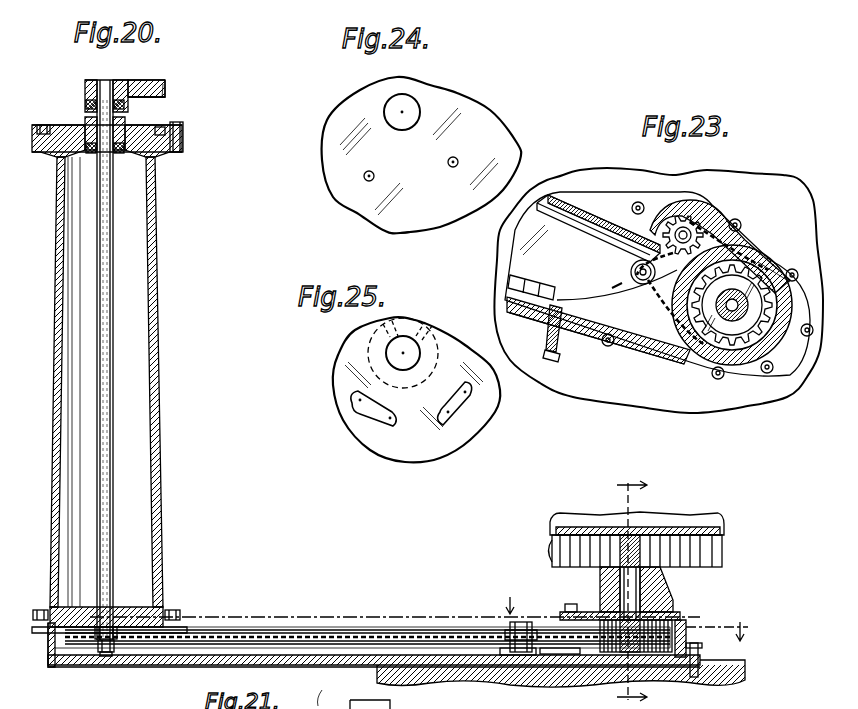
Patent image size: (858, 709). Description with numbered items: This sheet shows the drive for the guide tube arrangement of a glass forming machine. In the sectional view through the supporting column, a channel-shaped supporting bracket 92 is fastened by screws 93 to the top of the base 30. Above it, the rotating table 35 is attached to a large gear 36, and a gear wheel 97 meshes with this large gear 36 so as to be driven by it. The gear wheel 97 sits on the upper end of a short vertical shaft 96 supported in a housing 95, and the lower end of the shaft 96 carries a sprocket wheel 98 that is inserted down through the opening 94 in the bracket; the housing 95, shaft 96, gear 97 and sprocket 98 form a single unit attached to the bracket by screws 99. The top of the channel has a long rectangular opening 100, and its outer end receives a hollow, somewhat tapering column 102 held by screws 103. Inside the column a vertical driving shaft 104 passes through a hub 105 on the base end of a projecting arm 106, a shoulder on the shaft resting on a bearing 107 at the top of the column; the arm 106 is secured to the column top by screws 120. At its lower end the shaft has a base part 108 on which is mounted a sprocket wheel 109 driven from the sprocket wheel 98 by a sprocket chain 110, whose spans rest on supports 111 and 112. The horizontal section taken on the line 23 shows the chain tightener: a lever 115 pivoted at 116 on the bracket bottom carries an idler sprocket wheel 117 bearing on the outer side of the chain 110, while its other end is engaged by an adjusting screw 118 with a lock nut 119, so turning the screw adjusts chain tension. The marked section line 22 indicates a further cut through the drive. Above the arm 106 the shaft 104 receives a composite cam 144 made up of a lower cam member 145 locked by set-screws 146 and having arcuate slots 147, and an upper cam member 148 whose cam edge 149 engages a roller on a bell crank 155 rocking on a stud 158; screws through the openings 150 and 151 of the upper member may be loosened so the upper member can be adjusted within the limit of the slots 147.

In FIG. 20, the section line 22- 22 is at (615, 594).
In FIG. 20, the section line 23— 23 is at (621, 610).
In FIG. 20, the base 30 is at (745, 680).
In FIG. 23, the base 30 is at (640, 407).
In FIG. 20, the rotating table 35 is at (700, 520).
In FIG. 20, the large gear 36 is at (700, 550).
In FIG. 20, the supporting bracket 92 is at (160, 666).
In FIG. 23, the supporting bracket 92 is at (685, 368).
In FIG. 20, the screws 93 is at (698, 648).
In FIG. 23, the screws 93 is at (640, 202).
In FIG. 20, the opening 94 is at (590, 612).
In FIG. 20, the housing 95 is at (645, 575).
In FIG. 20, the vertical shaft 96 is at (660, 595).
In FIG. 23, the vertical shaft 96 is at (775, 270).
In FIG. 20, the gear wheel 97 is at (552, 552).
In FIG. 20, the sprocket wheel 98 is at (640, 652).
In FIG. 23, the sprocket wheel 98 is at (716, 305).
In FIG. 20, the screws 99 is at (571, 604).
In FIG. 20, the rectangular opening 100 is at (330, 622).
In FIG. 20, the column 102 is at (160, 490).
In FIG. 20, the screws 103 is at (40, 610).
In FIG. 20, the vertical driving shaft 104 is at (110, 382).
In FIG. 20, the hub 105 is at (86, 120).
In FIG. 20, the projecting arm 106 is at (183, 135).
In FIG. 20, the bearing 107 is at (124, 150).
In FIG. 20, the nut 108 is at (112, 625).
In FIG. 20, the sprocket wheel 109 is at (93, 640).
In FIG. 20, the sprocket chain 110 is at (277, 630).
In FIG. 23, the sprocket chain 110 is at (555, 210).
In FIG. 23, the support 111 is at (510, 282).
In FIG. 20, the support 112 is at (340, 645).
In FIG. 23, the support 112 is at (600, 222).
In FIG. 20, the lever 115 is at (515, 655).
In FIG. 23, the lever 115 is at (610, 290).
In FIG. 20, the pivot 116 is at (510, 628).
In FIG. 23, the pivot 116 is at (640, 260).
In FIG. 20, the idler sprocket wheel 117 is at (565, 654).
In FIG. 23, the idler sprocket wheel 117 is at (685, 215).
In FIG. 23, the adjusting screw 118 is at (550, 360).
In FIG. 23, the lock nut 119 is at (565, 352).
In FIG. 20, the screws 120 is at (44, 125).
In FIG. 20, the composite cam 144 is at (176, 77).
In FIG. 20, the lower cam member 145 is at (165, 92).
In FIG. 25, the lower cam member 145 is at (355, 358).
In FIG. 20, the set-screws 146 is at (87, 103).
In FIG. 25, the set-screws 146 is at (385, 322).
In FIG. 25, the arcuate slots 147 is at (362, 418).
In FIG. 20, the upper cam member 148 is at (150, 75).
In FIG. 24, the upper cam member 148 is at (475, 118).
In FIG. 20, the cam edge 149 is at (165, 89).
In FIG. 24, the cam edge 149 is at (367, 225).
In FIG. 24, the opening 150 is at (365, 178).
In FIG. 24, the opening 151 is at (458, 160).
In FIG. 20, the bell crank 155 is at (305, 698).
In FIG. 20, the stud 158 is at (390, 703).